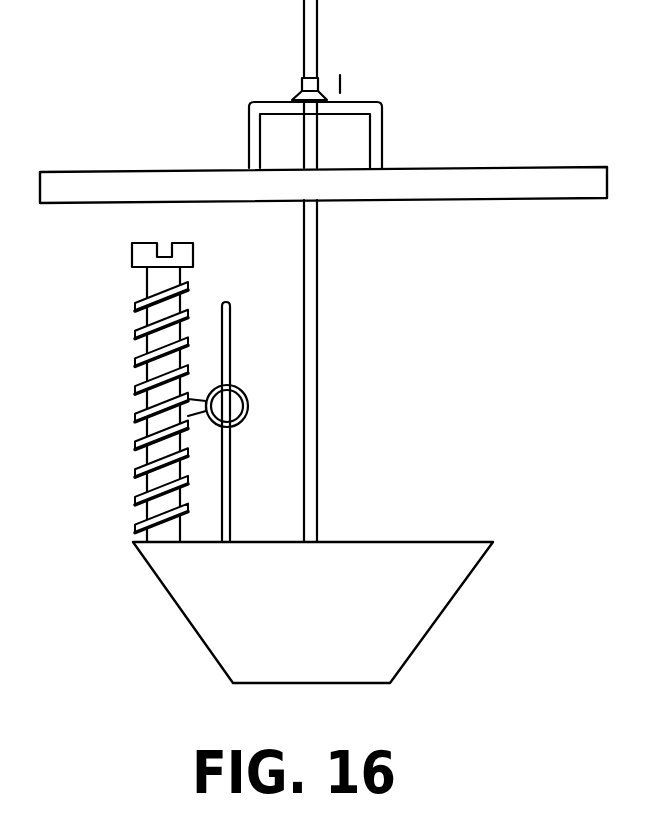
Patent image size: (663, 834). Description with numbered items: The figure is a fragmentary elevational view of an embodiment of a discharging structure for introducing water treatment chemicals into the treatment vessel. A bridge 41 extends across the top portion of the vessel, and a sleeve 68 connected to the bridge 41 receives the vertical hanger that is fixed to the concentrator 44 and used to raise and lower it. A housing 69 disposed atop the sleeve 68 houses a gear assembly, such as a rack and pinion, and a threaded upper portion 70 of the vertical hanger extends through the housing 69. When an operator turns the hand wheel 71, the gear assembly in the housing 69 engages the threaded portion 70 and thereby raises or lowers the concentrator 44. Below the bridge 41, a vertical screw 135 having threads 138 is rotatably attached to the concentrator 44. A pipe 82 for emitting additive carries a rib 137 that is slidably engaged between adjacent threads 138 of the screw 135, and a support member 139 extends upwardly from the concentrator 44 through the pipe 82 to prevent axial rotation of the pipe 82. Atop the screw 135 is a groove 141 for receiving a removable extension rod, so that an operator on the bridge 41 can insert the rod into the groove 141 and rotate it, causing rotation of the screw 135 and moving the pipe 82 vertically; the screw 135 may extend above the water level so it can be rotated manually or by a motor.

The threaded upper portion 70 is at (317, 35).
The housing 69 is at (301, 83).
The hand wheel 71 is at (318, 84).
The bridge 41 is at (476, 167).
The sleeve 68 is at (318, 286).
The groove 141 is at (163, 250).
The vertical screw 135 is at (114, 404).
The threads 138 is at (135, 390).
The support member 139 is at (232, 315).
The rib 137 is at (193, 418).
The pipe 82 is at (245, 393).
The concentrator 44 is at (444, 613).